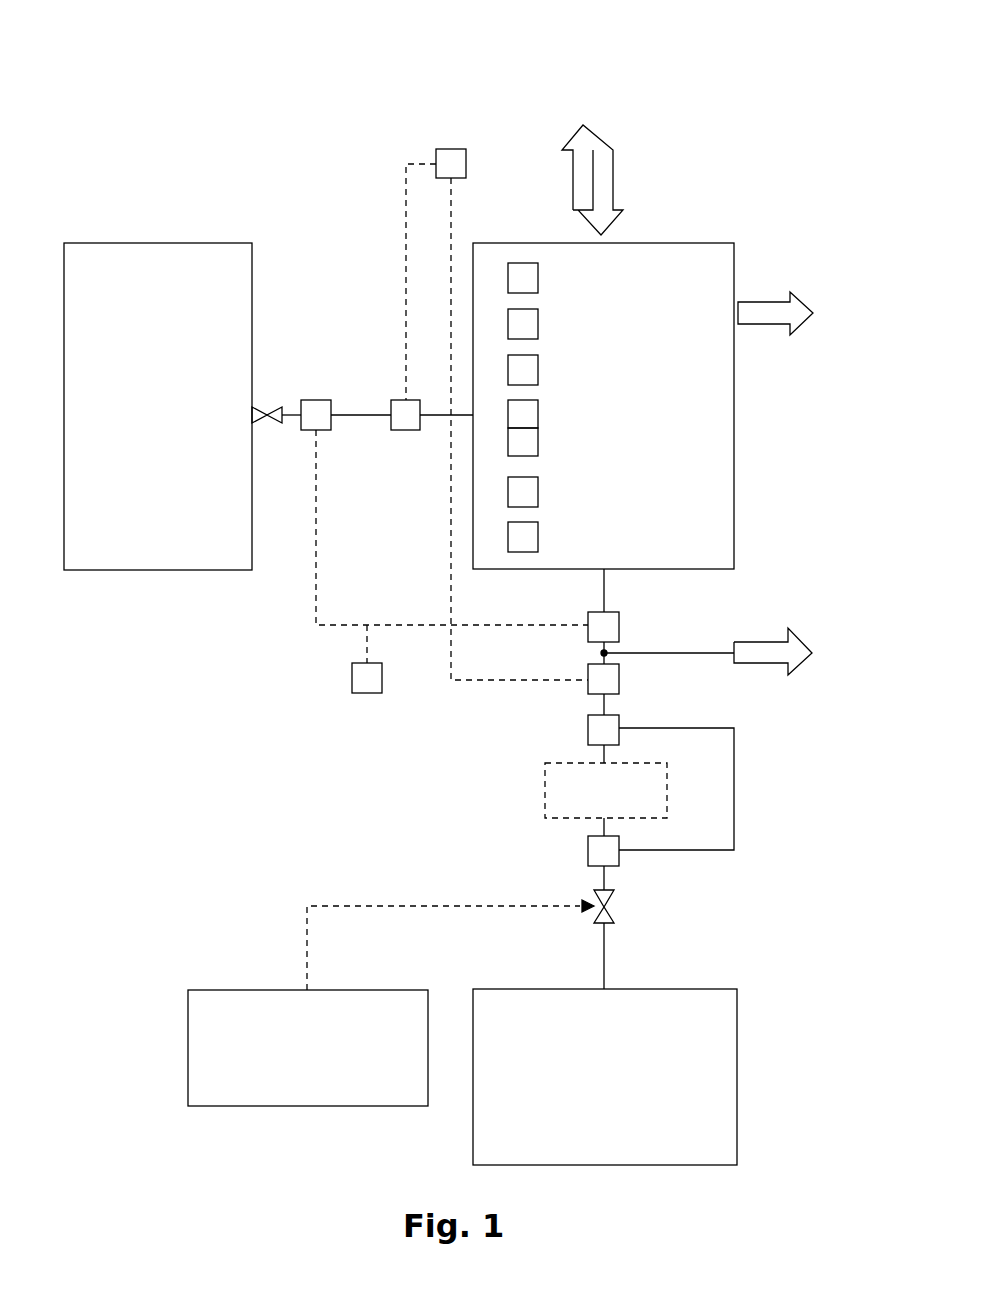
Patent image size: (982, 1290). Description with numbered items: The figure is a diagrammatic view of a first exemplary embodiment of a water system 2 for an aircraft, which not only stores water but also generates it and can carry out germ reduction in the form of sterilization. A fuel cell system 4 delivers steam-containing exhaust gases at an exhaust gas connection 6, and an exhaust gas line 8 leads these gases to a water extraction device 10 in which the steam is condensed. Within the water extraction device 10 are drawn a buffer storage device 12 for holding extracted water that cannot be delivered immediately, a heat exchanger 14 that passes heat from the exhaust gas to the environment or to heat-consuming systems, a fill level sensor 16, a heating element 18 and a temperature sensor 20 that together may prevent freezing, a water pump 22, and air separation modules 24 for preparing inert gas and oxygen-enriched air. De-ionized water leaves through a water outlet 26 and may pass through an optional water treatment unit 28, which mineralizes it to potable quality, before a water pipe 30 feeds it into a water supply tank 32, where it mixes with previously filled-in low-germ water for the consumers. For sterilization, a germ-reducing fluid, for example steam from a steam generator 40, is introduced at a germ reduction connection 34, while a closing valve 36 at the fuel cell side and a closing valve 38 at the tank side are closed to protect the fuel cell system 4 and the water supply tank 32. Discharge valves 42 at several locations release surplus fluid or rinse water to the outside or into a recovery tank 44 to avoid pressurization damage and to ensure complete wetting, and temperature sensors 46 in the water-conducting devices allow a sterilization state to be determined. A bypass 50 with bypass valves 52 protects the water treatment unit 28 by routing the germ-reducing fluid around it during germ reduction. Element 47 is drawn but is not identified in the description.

The water system 2 is at (358, 116).
The fuel cell system 4 is at (163, 550).
The exhaust gas connection 6 is at (256, 401).
The exhaust gas line 8 is at (350, 420).
The water extraction device 10 is at (673, 255).
The buffer storage device 12 is at (527, 277).
The heat exchanger 14 is at (527, 323).
The fill level sensor 16 is at (527, 369).
The heating element 18 is at (527, 440).
The temperature sensor 20 is at (527, 410).
The water pump 22 is at (527, 492).
The air separation modules 24 is at (527, 537).
The water outlet 26 is at (601, 573).
The water treatment unit 28 is at (545, 778).
The water pipe 30 is at (605, 875).
The water supply tank 32 is at (713, 1072).
The germ reduction connection 34 is at (585, 905).
The closing valve 36 is at (263, 422).
The closing valve 38 is at (609, 904).
The steam generator 40 is at (209, 1052).
The discharge valves 42 is at (318, 403).
The recovery tank 44 is at (352, 683).
The temperature sensors 46 is at (405, 422).
The evaluation unit 47 is at (452, 157).
The bypass 50 is at (746, 790).
The bypass valves 52 is at (588, 727).